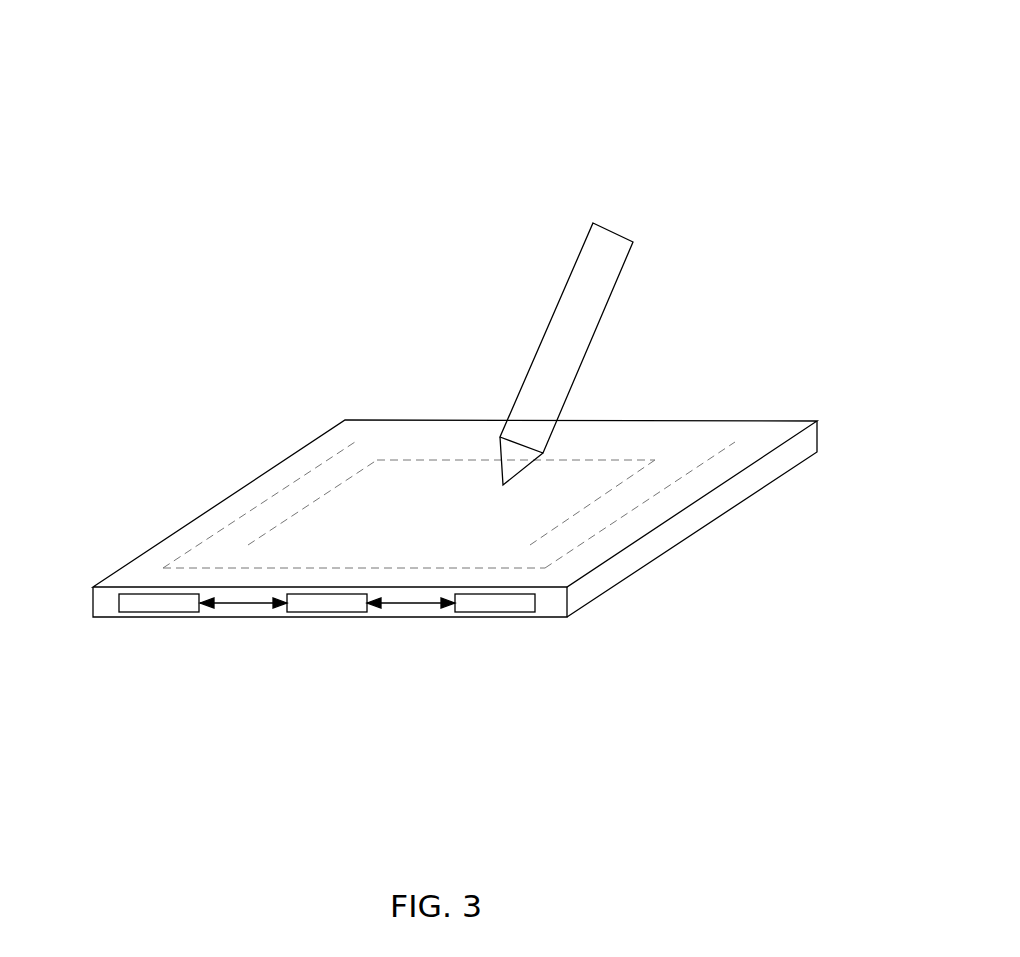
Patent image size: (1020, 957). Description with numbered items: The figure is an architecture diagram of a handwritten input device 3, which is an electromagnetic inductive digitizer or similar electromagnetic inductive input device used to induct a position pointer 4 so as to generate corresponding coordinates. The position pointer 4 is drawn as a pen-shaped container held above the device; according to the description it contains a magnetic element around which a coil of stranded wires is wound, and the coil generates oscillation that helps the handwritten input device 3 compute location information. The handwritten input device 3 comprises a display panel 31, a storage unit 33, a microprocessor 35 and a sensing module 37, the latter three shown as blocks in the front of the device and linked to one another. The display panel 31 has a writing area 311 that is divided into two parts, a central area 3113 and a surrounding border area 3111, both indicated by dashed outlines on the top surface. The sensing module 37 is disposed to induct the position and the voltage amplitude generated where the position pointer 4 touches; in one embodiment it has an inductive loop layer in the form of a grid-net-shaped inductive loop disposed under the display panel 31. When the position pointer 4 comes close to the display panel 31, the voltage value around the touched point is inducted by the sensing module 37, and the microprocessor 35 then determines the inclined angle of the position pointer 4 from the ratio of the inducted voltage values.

The handwritten input device 3 is at (99, 86).
The position pointer 4 is at (545, 325).
The display panel 31 is at (320, 498).
The writing area 311 is at (845, 580).
The border area 3111 is at (633, 490).
The central area 3113 is at (517, 522).
The storage unit 33 is at (158, 609).
The microprocessor 35 is at (323, 609).
The sensing module 37 is at (495, 609).